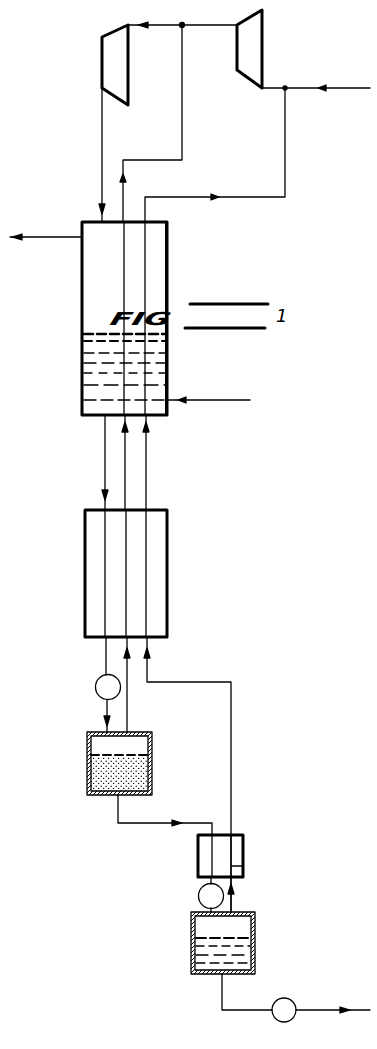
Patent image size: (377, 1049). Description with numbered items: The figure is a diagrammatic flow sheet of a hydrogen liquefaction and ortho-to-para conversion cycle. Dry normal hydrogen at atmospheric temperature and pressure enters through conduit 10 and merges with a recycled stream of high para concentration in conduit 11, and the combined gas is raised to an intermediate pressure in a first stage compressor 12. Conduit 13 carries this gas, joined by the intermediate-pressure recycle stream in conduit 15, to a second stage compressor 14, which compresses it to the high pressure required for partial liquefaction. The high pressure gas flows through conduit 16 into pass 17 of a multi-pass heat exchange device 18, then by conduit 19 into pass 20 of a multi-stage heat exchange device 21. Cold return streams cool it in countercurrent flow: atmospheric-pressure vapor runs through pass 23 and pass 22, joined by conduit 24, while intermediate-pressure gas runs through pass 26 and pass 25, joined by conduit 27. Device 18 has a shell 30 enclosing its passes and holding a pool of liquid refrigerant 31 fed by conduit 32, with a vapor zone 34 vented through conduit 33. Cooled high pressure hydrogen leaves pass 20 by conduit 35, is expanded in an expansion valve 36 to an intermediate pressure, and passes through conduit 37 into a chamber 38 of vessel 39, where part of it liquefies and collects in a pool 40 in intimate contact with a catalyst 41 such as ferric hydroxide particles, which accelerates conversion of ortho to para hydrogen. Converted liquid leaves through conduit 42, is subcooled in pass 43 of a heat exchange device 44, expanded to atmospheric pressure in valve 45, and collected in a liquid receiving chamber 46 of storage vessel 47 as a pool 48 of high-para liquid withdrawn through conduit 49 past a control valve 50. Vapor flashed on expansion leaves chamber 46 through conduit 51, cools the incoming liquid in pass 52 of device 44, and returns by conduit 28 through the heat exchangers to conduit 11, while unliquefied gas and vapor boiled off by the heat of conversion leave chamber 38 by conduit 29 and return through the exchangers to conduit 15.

The conduit 10 is at (336, 88).
The conduit 11 is at (285, 128).
The first stage compressor 12 is at (264, 50).
The conduit 13 is at (197, 27).
The second stage compressor 14 is at (105, 70).
The conduit 15 is at (182, 64).
The conduit 16 is at (102, 133).
The pass 17 is at (105, 282).
The multi-pass heat exchange device 18 is at (175, 290).
The conduit 19 is at (105, 452).
The pass 20 is at (103, 530).
The multi-stage heat exchange device 21 is at (80, 560).
The pass 22 is at (146, 310).
The pass 23 is at (148, 575).
The conduit 24 is at (148, 466).
The pass 25 is at (125, 392).
The pass 26 is at (128, 622).
The conduit 27 is at (126, 455).
The conduit 28 is at (231, 728).
The conduit 29 is at (128, 712).
The shell 30 is at (168, 358).
The pool of liquid refrigerant 31 is at (160, 378).
The conduit 32 is at (222, 400).
The conduit 33 is at (36, 237).
The vapor zone 34 is at (160, 243).
The conduit 35 is at (106, 650).
The expansion valve 36 is at (95, 687).
The conduit 37 is at (107, 708).
The chamber 38 is at (138, 745).
The vessel 39 is at (88, 794).
The pool 40 is at (90, 755).
The catalyst 41 is at (150, 766).
The conduit 42 is at (128, 823).
The pass 43 is at (200, 853).
The heat exchange device 44 is at (250, 836).
The valve 45 is at (200, 892).
The liquid receiving chamber 46 is at (238, 928).
The vessel 47 is at (192, 926).
The pool 48 is at (232, 960).
The conduit 49 is at (317, 1010).
The control valve 50 is at (278, 1022).
The conduit 51 is at (234, 900).
The pass 52 is at (247, 860).